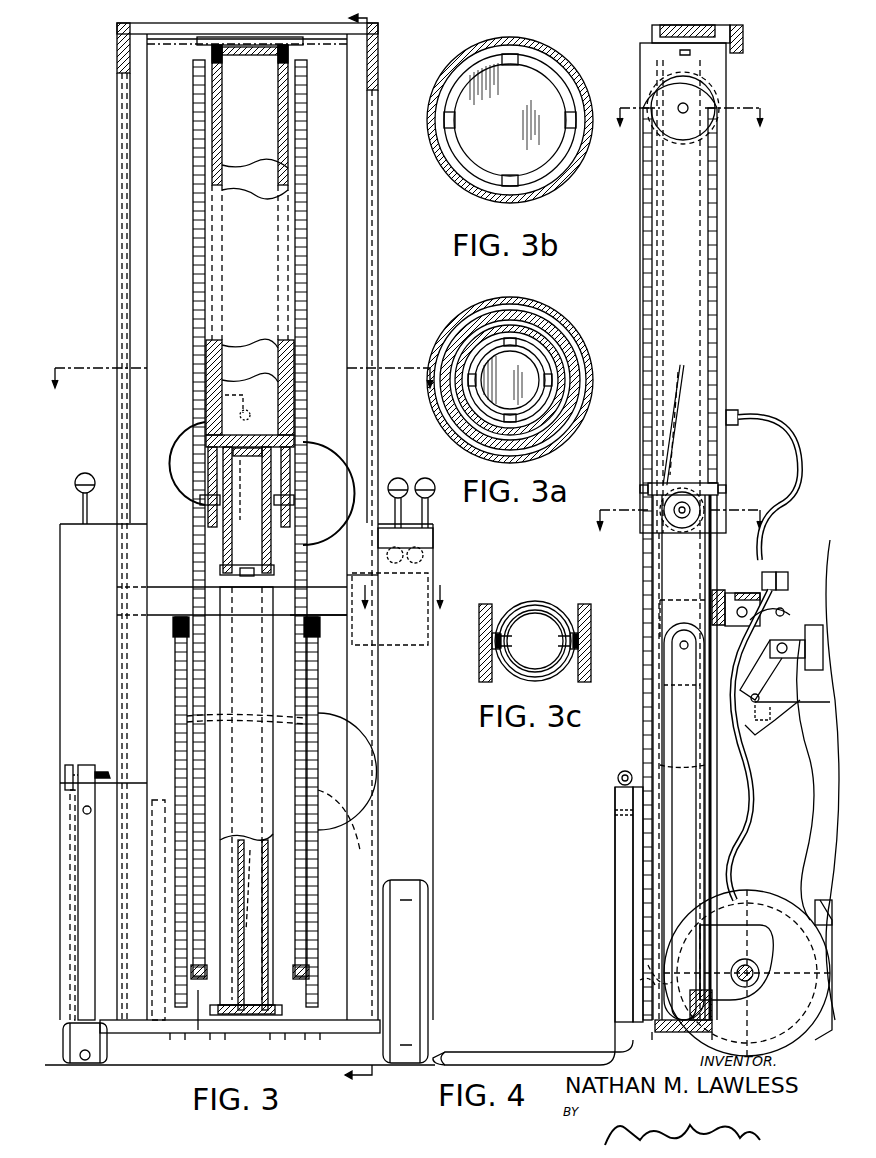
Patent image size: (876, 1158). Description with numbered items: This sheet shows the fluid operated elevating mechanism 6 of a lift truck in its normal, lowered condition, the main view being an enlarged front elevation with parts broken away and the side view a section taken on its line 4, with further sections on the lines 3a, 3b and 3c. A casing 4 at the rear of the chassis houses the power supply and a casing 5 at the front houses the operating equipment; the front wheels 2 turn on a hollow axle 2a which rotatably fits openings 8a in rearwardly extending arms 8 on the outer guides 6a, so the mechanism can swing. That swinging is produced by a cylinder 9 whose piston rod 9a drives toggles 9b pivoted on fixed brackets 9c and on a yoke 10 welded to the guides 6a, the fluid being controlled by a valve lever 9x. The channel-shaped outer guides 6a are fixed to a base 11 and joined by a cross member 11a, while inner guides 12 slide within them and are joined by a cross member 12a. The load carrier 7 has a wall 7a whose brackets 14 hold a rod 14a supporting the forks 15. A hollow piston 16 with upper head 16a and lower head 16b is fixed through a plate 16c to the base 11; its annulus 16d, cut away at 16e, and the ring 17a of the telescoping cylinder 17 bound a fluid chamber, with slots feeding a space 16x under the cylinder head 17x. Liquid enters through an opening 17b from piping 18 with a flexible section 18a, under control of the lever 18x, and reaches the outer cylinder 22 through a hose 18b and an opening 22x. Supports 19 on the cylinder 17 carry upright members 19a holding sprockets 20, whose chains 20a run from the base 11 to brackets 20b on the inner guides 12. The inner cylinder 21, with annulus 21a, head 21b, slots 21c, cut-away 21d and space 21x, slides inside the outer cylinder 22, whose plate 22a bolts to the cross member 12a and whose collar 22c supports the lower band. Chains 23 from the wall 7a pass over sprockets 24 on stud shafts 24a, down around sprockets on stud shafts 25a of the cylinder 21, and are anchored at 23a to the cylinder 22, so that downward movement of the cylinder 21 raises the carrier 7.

In FIG. 3, the front wheels 2 is at (62, 1062).
In FIG. 4, the front wheels 2 is at (806, 1030).
In FIG. 4, the hollow axle 2a is at (765, 990).
In FIG. 3, the section line 3a— 3a is at (182, 450).
In FIG. 3, the section line 3b— 3b is at (248, 74).
In FIG. 4, the section line 3c— 3c is at (692, 131).
In FIG. 3, the casing 4 is at (373, 556).
In FIG. 3, the casing 5 is at (420, 690).
In FIG. 4, the casing 5 is at (755, 760).
In FIG. 3, the elevating mechanism 6 is at (242, 460).
In FIG. 4, the elevating mechanism 6 is at (670, 386).
In FIG. 3, the outer guides 6a is at (378, 80).
In FIG. 4, the outer guides 6a is at (715, 72).
In FIG. 4, the load carrier 7 is at (683, 757).
In FIG. 3, the wall 7a is at (158, 800).
In FIG. 3A, the wall 7a is at (617, 395).
In FIG. 4, the wall 7a is at (662, 356).
In FIG. 4, the arms 8 is at (700, 596).
In FIG. 4, the openings 8a is at (760, 973).
In FIG. 4, the cylinder 9 is at (812, 630).
In FIG. 4, the rod 9a is at (795, 640).
In FIG. 4, the toggles 9b is at (762, 696).
In FIG. 4, the fixed brackets 9c is at (769, 717).
In FIG. 3, the lever 9x is at (428, 526).
In FIG. 3, the yoke 10 is at (330, 615).
In FIG. 4, the yoke 10 is at (742, 593).
In FIG. 3, the base 11 is at (165, 1028).
In FIG. 4, the base 11 is at (718, 1040).
In FIG. 4, the cross member 11a is at (743, 42).
In FIG. 3, the inner guides 12 is at (117, 33).
In FIG. 4, the inner guides 12 is at (660, 60).
In FIG. 3, the cross member 12a is at (418, 597).
In FIG. 4, the cross member 12a is at (655, 34).
In FIG. 3, the brackets 14 is at (68, 765).
In FIG. 4, the brackets 14 is at (625, 771).
In FIG. 3, the rod 14a is at (100, 770).
In FIG. 4, the rod 14a is at (618, 788).
In FIG. 3, the forks 15 is at (86, 1060).
In FIG. 4, the forks 15 is at (540, 1052).
In FIG. 3, the piston 16 is at (228, 985).
In FIG. 3, the upper head 16a is at (247, 511).
In FIG. 3A, the upper head 16a is at (540, 335).
In FIG. 3, the lower head 16b is at (268, 980).
In FIG. 3, the plate 16c is at (230, 1018).
In FIG. 4, the plate 16c is at (680, 1032).
In FIG. 3, the annulus 16d is at (233, 400).
In FIG. 3A, the annulus 16d is at (530, 450).
In FIG. 3A, the cut-away 16e is at (510, 380).
In FIG. 3, the space 16x is at (290, 410).
In FIG. 3, the cylinder 17 is at (275, 572).
In FIG. 3A, the cylinder 17 is at (460, 340).
In FIG. 4, the cylinder 17 is at (656, 574).
In FIG. 3, the ring 17a is at (260, 1004).
In FIG. 3, the opening 17b is at (243, 901).
In FIG. 3, the head 17x is at (253, 424).
In FIG. 4, the piping 18 is at (785, 578).
In FIG. 3, the flexible section 18a is at (318, 750).
In FIG. 4, the flexible section 18a is at (748, 795).
In FIG. 4, the hose section 18b is at (780, 438).
In FIG. 3, the lever 18x is at (398, 478).
In FIG. 3, the supports 19 is at (195, 1026).
In FIG. 4, the supports 19 is at (645, 988).
In FIG. 4, the upright members 19a is at (660, 690).
In FIG. 3, the sprocket 20 is at (175, 635).
In FIG. 3, the chain 20a is at (177, 720).
In FIG. 4, the chain 20a is at (695, 800).
In FIG. 3, the bracket 20b is at (327, 1008).
In FIG. 4, the bracket 20b is at (715, 1005).
In FIG. 3, the inner cylinder 21 is at (222, 128).
In FIG. 3B, the inner cylinder 21 is at (510, 120).
In FIG. 3A, the inner cylinder 21 is at (508, 312).
In FIG. 3C, the inner cylinder 21 is at (508, 615).
In FIG. 3, the annulus 21a is at (174, 50).
In FIG. 3B, the annulus 21a is at (495, 188).
In FIG. 3, the head 21b is at (266, 60).
In FIG. 3B, the head 21b is at (535, 75).
In FIG. 3B, the slots 21c is at (560, 110).
In FIG. 3B, the cut-away 21d is at (452, 116).
In FIG. 3, the space 21x is at (252, 58).
In FIG. 3, the outer cylinder 22 is at (212, 174).
In FIG. 3B, the outer cylinder 22 is at (550, 196).
In FIG. 3A, the outer cylinder 22 is at (478, 460).
In FIG. 3C, the outer cylinder 22 is at (554, 612).
In FIG. 4, the outer cylinder 22 is at (726, 280).
In FIG. 3, the plate 22a is at (378, 58).
In FIG. 4, the plate 22a is at (670, 55).
In FIG. 3, the collar 22c is at (200, 515).
In FIG. 3, the opening 22x is at (250, 433).
In FIG. 3, the chains 23 is at (193, 288).
In FIG. 3C, the chains 23 is at (480, 604).
In FIG. 4, the chains 23 is at (720, 325).
In FIG. 4, the anchorage 23a is at (682, 368).
In FIG. 3, the sprockets 24 is at (193, 122).
In FIG. 3C, the sprockets 24 is at (479, 624).
In FIG. 4, the sprockets 24 is at (688, 132).
In FIG. 3C, the stud shafts 24a is at (479, 648).
In FIG. 4, the stud shafts 24a is at (690, 104).
In FIG. 3, the stud shafts 25a is at (205, 538).